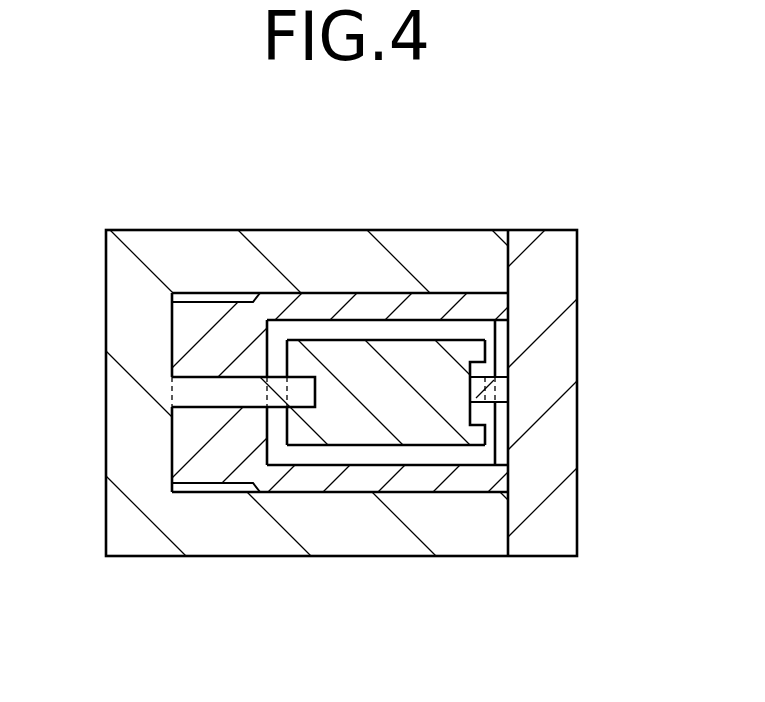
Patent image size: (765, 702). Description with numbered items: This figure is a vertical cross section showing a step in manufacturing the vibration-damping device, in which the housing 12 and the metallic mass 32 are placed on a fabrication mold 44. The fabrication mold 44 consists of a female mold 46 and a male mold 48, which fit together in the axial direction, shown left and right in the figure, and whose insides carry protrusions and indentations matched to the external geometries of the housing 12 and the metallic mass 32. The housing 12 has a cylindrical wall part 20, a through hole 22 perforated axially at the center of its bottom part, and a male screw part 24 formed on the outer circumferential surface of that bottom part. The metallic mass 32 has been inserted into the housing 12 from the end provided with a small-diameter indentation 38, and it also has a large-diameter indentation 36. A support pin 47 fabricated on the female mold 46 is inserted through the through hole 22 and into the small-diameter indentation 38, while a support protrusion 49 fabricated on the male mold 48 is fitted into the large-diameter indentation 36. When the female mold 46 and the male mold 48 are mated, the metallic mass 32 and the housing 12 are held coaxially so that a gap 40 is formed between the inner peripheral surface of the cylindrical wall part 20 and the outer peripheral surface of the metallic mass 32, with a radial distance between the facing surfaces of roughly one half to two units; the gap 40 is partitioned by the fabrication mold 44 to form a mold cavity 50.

The housing 12 is at (453, 500).
The cylindrical wall part 20 is at (393, 307).
The through hole 22 is at (243, 407).
The male screw part 24 is at (230, 300).
The metallic mass 32 is at (370, 380).
The large-diameter indentation 36 is at (484, 377).
The small-diameter indentation 38 is at (300, 406).
The gap 40 is at (462, 310).
The fabrication mold 44 is at (130, 200).
The female mold 46 is at (132, 330).
The support pin 47 is at (202, 392).
The male mold 48 is at (548, 468).
The support protrusion 49 is at (482, 402).
The mold cavity 50 is at (372, 455).